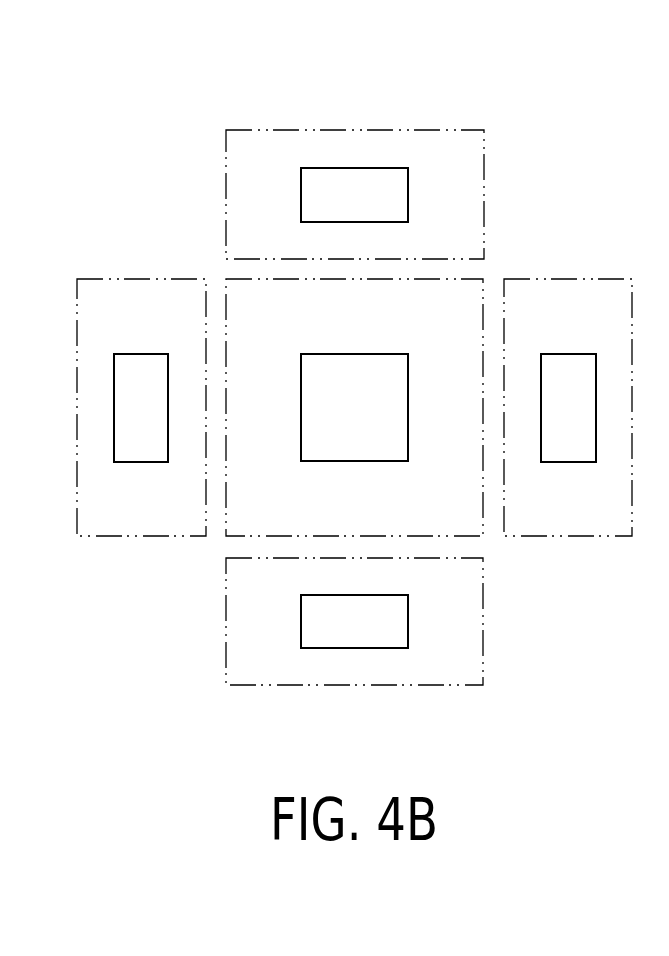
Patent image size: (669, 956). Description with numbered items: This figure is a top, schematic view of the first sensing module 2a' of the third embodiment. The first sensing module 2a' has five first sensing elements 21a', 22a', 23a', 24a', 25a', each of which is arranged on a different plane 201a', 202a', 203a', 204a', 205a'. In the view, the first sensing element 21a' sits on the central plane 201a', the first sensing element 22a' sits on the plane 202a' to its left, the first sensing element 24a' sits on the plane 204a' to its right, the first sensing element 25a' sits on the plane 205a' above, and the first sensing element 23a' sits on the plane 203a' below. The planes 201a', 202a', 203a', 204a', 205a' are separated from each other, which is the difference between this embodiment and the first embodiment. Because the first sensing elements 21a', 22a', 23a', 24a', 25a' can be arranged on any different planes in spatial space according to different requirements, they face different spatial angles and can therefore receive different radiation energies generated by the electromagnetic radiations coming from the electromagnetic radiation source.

The first sensing module 2a' is at (342, 367).
The first sensing element 21a' is at (354, 407).
The first sensing element 22a' is at (141, 408).
The first sensing element 23a' is at (354, 621).
The first sensing element 24a' is at (568, 408).
The first sensing element 25a' is at (354, 195).
The plane 201a' is at (428, 439).
The plane 202a' is at (141, 357).
The plane 203a' is at (283, 621).
The plane 204a' is at (568, 351).
The plane 205a' is at (355, 165).